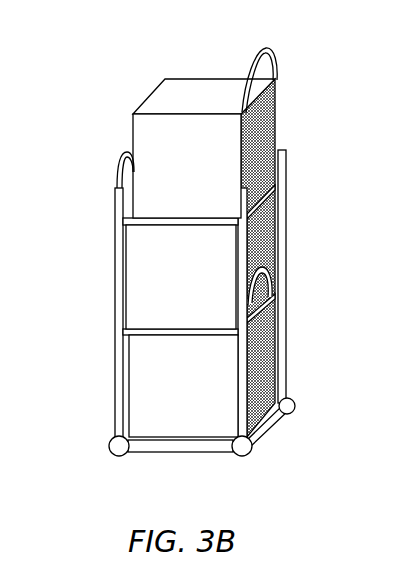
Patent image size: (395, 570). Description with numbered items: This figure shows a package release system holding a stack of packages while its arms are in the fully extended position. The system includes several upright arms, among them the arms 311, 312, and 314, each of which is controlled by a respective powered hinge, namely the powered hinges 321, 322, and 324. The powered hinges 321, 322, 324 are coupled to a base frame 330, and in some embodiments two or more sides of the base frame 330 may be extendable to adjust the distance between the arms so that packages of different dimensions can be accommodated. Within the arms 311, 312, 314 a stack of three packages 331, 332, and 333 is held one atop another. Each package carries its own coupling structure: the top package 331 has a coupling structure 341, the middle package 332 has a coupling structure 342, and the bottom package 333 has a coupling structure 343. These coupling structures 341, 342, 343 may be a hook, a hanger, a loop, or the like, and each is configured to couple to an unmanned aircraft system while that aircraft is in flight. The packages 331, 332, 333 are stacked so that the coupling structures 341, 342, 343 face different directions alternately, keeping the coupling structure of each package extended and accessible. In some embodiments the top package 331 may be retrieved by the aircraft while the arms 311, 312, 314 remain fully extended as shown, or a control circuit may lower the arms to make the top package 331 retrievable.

The arm 311 is at (117, 213).
The arm 312 is at (248, 250).
The arm 314 is at (287, 158).
The powered hinge 321 is at (124, 453).
The powered hinge 322 is at (248, 450).
The powered hinge 324 is at (295, 403).
The base frame 330 is at (275, 425).
The top package 331 is at (159, 90).
The package 332 is at (143, 280).
The package 333 is at (143, 393).
The coupling structure 341 is at (272, 54).
The coupling structure 342 is at (118, 172).
The coupling structure 343 is at (272, 278).